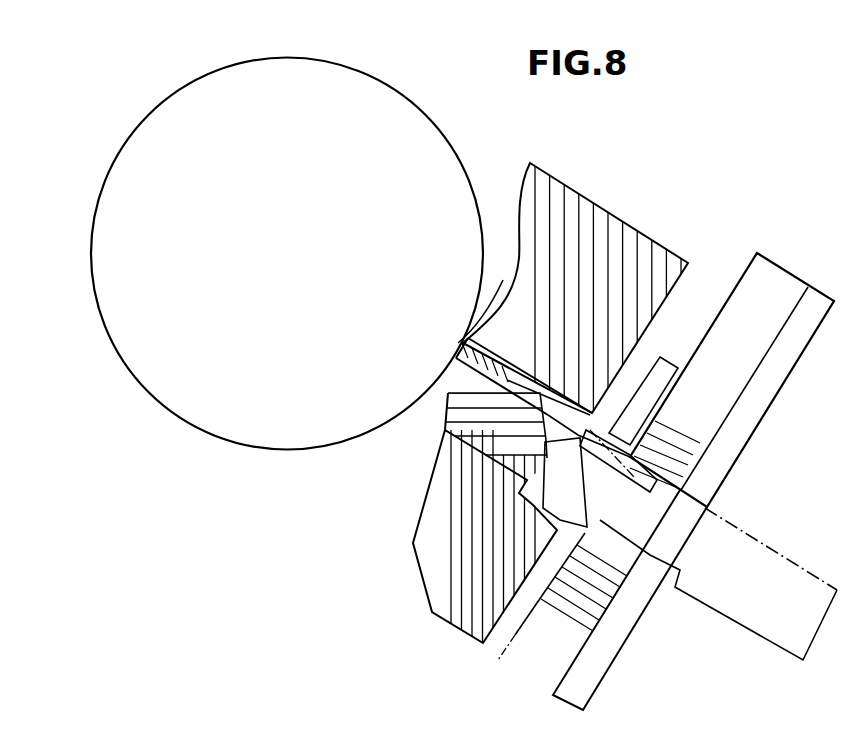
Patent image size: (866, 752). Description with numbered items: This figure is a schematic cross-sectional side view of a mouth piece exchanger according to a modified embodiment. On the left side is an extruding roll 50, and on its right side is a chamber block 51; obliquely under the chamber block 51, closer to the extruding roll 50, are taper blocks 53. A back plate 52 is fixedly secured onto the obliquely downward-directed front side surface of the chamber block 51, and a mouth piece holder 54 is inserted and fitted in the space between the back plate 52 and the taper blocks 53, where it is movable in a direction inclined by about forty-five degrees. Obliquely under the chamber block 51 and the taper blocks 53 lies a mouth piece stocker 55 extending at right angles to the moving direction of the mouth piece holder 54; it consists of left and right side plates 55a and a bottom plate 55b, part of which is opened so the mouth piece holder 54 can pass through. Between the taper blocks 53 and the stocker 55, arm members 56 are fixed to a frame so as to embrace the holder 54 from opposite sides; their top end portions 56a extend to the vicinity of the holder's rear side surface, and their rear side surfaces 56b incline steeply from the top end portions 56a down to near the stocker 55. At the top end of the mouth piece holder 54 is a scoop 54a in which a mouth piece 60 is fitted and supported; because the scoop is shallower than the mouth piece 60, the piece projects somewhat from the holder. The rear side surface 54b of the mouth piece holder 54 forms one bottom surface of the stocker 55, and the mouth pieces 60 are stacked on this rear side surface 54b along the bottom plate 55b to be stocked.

The extruding roll 50 is at (168, 410).
The chamber block 51 is at (633, 229).
The back plate 52 is at (490, 308).
The taper blocks 53 is at (412, 541).
The mouth piece holder 54 is at (462, 425).
The scoop 54a is at (452, 428).
The rear side surface 54b is at (548, 394).
The mouth piece stocker 55 is at (780, 416).
The side plates 55a is at (783, 270).
The bottom plate 55b is at (730, 445).
The arm members 56 is at (556, 525).
The top end portions 56a is at (578, 414).
The rear side surfaces 56b is at (622, 465).
The mouth piece 60 is at (458, 362).